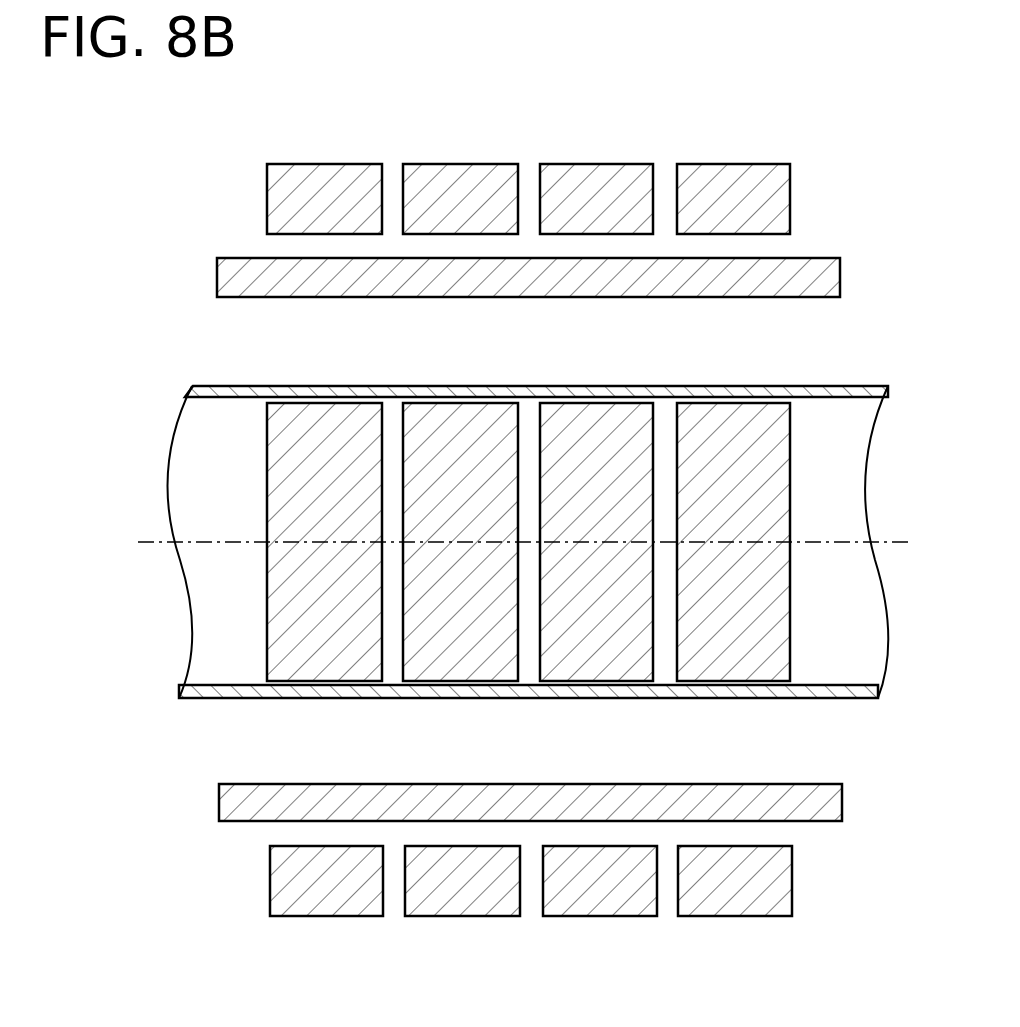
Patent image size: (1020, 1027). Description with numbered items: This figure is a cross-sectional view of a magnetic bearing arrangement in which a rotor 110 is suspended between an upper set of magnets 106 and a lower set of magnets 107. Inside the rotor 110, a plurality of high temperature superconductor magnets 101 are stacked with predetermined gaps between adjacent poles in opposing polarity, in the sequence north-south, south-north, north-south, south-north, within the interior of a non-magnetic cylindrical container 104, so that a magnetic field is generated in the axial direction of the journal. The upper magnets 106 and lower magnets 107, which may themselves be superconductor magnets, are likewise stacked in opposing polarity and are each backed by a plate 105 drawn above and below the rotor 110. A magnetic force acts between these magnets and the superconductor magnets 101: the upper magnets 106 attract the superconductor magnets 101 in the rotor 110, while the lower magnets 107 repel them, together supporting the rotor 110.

The high temperature superconductor magnet 101 is at (738, 403).
The non-magnetic cylindrical container 104 is at (460, 392).
The yoke (back iron plate) 105 is at (812, 268).
The upper magnet 106 is at (483, 168).
The lower magnet 107 is at (480, 910).
The rotor 110 is at (150, 567).